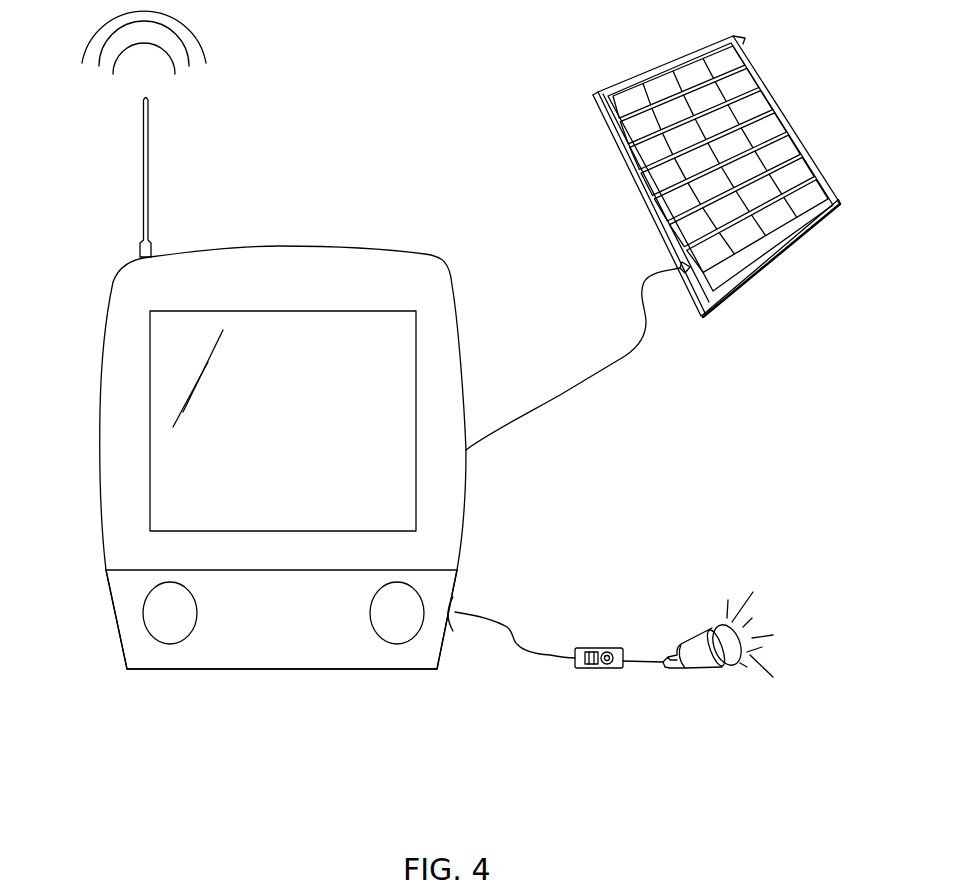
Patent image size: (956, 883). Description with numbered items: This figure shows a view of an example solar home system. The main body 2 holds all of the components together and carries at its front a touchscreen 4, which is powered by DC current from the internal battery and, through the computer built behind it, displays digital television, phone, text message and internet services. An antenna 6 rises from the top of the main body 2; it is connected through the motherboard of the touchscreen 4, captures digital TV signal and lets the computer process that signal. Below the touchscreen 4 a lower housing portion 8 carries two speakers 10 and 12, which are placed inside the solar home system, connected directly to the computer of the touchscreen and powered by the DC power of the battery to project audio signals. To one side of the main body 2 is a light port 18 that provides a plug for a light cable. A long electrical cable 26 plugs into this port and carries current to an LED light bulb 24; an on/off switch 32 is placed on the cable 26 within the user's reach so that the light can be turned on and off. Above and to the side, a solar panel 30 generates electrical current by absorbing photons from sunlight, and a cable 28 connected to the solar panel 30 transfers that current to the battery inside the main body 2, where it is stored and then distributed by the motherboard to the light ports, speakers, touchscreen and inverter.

The main body 2 is at (100, 407).
The touchscreen 4 is at (347, 310).
The antenna 6 is at (144, 172).
The lower housing portion 8 is at (113, 617).
The speaker 10 is at (155, 642).
The speaker 12 is at (400, 645).
The light port 18 is at (455, 610).
The LED light bulb 24 is at (713, 628).
The electrical cable 26 is at (548, 652).
The cable 28 is at (578, 383).
The solar panel 30 is at (656, 72).
The on/off switch 32 is at (605, 668).